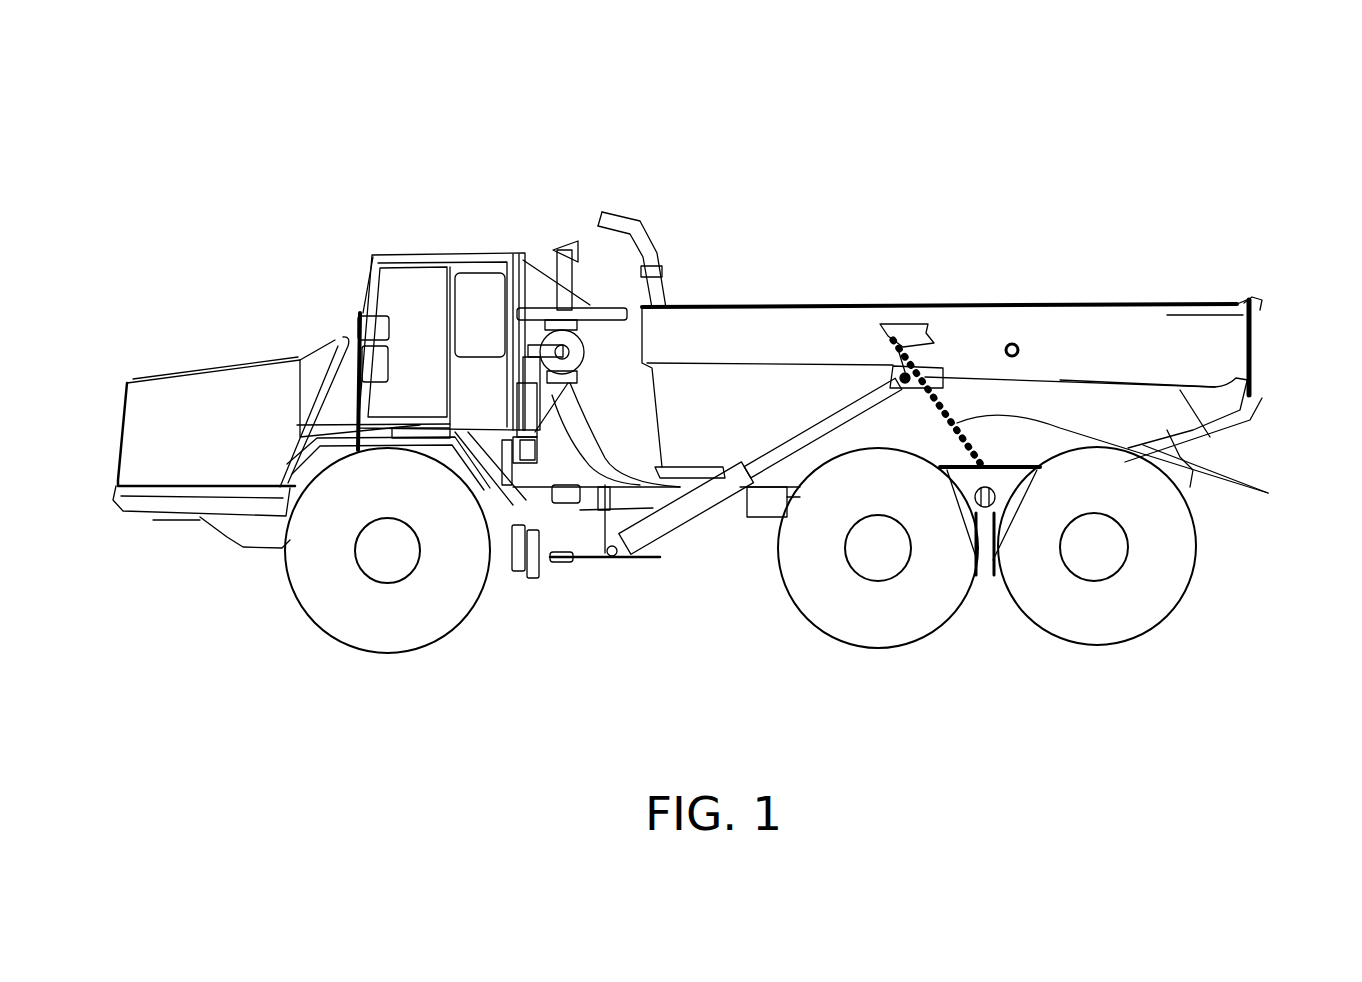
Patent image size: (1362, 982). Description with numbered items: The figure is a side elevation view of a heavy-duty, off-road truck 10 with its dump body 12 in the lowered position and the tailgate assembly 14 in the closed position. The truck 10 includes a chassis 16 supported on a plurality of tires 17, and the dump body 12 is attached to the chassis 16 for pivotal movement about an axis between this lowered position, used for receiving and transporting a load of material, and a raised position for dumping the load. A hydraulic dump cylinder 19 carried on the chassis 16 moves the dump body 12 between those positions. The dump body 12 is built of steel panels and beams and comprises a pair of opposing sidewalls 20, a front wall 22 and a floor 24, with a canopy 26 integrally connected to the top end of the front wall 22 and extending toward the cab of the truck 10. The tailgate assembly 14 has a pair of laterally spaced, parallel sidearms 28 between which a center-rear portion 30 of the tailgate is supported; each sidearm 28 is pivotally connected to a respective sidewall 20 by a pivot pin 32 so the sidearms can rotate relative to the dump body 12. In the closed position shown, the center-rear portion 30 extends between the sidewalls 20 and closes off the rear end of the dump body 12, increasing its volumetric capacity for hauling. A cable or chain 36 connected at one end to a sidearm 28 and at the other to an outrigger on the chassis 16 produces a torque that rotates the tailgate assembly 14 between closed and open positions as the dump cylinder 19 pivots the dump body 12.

The truck 10 is at (512, 147).
The dump body 12 is at (935, 265).
The tailgate assembly 14 is at (1180, 275).
The chassis 16 is at (741, 523).
The tires 17 is at (353, 627).
The hydraulic dump cylinder 19 is at (643, 552).
The sidewalls 20 is at (800, 320).
The front wall 22 is at (647, 337).
The floor 24 is at (815, 472).
The canopy 26 is at (613, 215).
The sidearms 28 is at (1052, 330).
The center-rear portion 30 is at (1257, 352).
The pivot pin 32 is at (1009, 343).
The chain 36 is at (1229, 482).